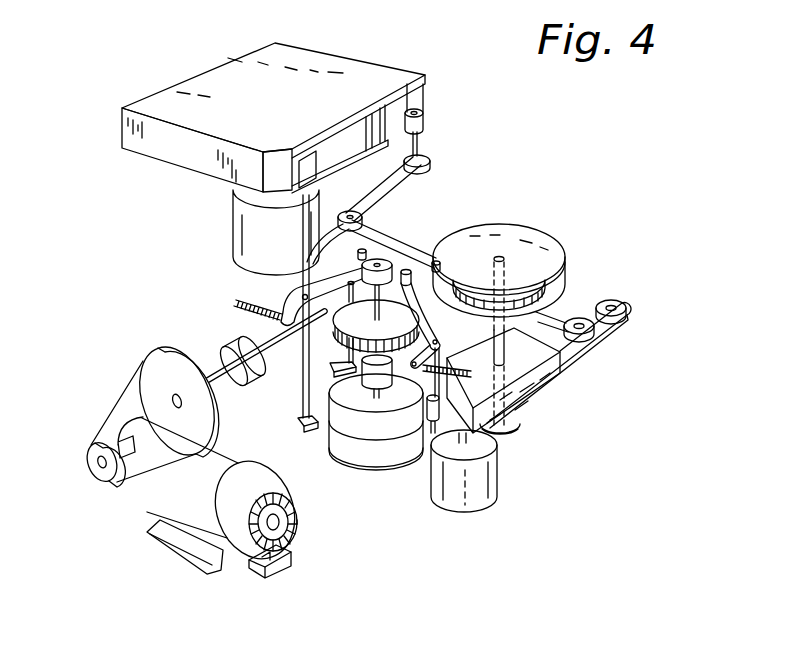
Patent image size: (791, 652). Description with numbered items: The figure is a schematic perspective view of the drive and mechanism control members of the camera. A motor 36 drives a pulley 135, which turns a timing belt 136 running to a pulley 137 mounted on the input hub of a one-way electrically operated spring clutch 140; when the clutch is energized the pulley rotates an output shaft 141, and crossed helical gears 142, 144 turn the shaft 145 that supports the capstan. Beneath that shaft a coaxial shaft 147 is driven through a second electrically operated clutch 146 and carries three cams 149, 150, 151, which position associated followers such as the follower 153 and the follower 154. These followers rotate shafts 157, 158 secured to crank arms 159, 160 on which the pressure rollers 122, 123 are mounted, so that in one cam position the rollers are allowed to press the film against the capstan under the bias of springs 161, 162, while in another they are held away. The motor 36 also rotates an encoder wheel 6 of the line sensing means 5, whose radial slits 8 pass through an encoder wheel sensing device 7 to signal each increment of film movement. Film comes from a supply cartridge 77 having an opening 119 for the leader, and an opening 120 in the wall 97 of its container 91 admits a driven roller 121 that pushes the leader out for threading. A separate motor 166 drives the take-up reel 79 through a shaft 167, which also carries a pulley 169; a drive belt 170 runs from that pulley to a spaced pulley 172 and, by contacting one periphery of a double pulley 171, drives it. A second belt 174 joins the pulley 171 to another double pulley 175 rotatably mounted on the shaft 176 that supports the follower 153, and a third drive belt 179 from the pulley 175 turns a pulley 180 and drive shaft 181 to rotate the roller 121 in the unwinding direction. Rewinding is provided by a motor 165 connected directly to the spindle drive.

The film supply cartridge 77 is at (301, 113).
The container 91 is at (193, 157).
The wall 97 is at (310, 152).
The opening 119 is at (360, 110).
The opening 120 is at (398, 105).
The driven roller 121 is at (424, 131).
The drive shaft 181 is at (408, 149).
The pulley 180 is at (429, 155).
The third drive belt 179 is at (410, 188).
The double pulley 175 is at (363, 217).
The shaft 176 is at (330, 222).
The second belt 174 is at (393, 233).
The pressure roller 122 is at (437, 265).
The take-up reel 79 is at (538, 252).
The shaft 167 is at (504, 352).
The pulley 169 is at (513, 423).
The drive belt 170 is at (590, 360).
The double pulley 171 is at (579, 317).
The pulley 172 is at (620, 305).
The crank arm 159 is at (440, 337).
The shaft 157 is at (427, 394).
The spring 162 is at (448, 380).
The follower 154 is at (460, 447).
The motor 166 is at (483, 488).
The crank arm 160 is at (298, 283).
The pressure roller 123 is at (360, 270).
The spring 161 is at (253, 312).
The crossed helical gear 144 is at (376, 326).
The shaft 145 is at (338, 333).
The crossed helical gear 142 is at (334, 330).
The follower 153 is at (312, 385).
The shaft 158 is at (303, 410).
The second electrically operated clutch 146 is at (362, 382).
The coaxial shaft 147 is at (378, 405).
The cam 149 is at (397, 432).
The cam 150 is at (380, 450).
The cam 151 is at (357, 469).
The output shaft 141 is at (267, 345).
The one-way electrically operated spring clutch 140 is at (248, 381).
The pulley 137 is at (153, 367).
The timing belt 136 is at (102, 422).
The pulley 135 is at (105, 473).
The motor 36 is at (170, 498).
The encoder wheel 6 is at (295, 506).
The encoder 5 is at (299, 530).
The encoder wheel sensing device 7 is at (257, 576).
The slit 8 is at (240, 556).
The motor 165 is at (287, 246).